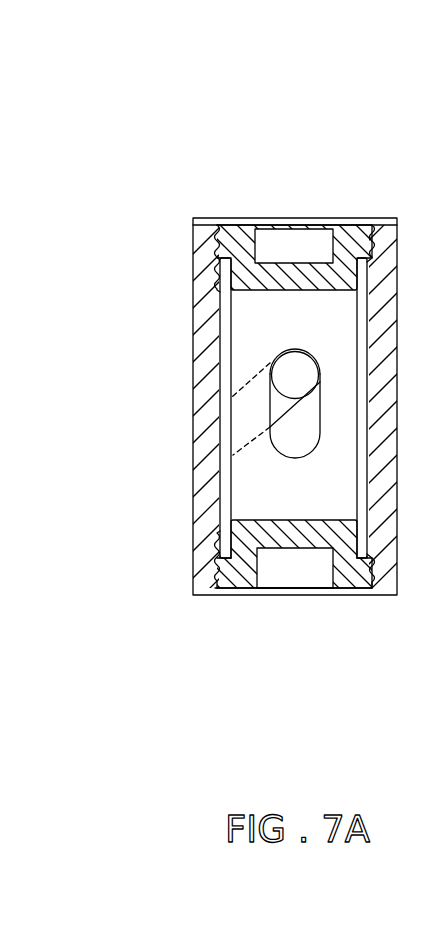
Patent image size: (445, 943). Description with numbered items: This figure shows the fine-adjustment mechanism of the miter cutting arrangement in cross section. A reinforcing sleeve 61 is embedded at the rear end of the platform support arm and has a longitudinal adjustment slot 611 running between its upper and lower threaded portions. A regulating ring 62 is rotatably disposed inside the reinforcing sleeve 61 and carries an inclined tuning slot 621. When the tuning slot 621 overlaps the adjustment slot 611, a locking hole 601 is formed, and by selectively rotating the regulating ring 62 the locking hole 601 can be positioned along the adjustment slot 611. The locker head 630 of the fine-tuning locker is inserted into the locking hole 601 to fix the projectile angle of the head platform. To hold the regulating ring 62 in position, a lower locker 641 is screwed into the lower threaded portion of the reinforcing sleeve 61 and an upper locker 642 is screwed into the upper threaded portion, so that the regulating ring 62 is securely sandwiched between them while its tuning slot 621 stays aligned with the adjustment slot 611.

The reinforcing sleeve 61 is at (207, 480).
The adjustment slot 611 is at (305, 432).
The regulating ring 62 is at (337, 460).
The tuning slot 621 is at (248, 422).
The locking hole 601 is at (290, 367).
The locker head 630 is at (302, 373).
The lower locker 641 is at (238, 238).
The upper locker 642 is at (353, 575).